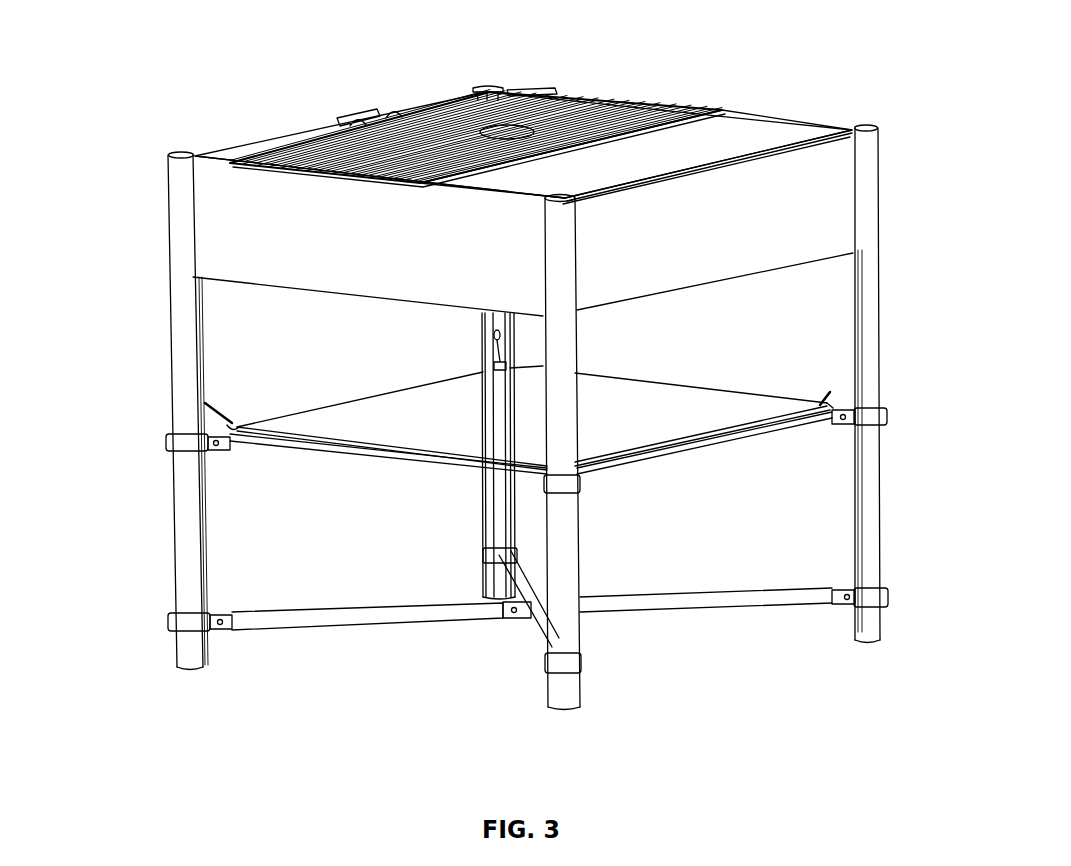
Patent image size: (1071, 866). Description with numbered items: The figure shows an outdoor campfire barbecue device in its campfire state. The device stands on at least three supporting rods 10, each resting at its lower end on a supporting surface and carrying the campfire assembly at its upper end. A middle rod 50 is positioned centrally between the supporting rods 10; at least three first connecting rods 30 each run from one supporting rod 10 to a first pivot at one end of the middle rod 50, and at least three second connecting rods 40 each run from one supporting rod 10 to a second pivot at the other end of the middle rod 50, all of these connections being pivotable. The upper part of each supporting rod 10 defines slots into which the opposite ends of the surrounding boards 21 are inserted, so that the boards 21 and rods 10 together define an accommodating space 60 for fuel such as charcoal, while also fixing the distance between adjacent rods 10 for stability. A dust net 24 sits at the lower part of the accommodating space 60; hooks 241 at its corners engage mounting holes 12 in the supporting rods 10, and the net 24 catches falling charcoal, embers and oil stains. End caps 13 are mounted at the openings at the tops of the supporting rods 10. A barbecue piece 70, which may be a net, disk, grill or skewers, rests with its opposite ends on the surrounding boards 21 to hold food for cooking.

The supporting rod 10 is at (190, 515).
The mounting hole 12 is at (495, 335).
The end cap 13 is at (486, 87).
The surrounding board 21 is at (236, 254).
The dust net 24 is at (782, 396).
The hook 241 is at (228, 425).
The first connecting rod 30 is at (812, 420).
The second connecting rod 40 is at (815, 597).
The middle rod 50 is at (534, 520).
The accommodating space 60 is at (747, 141).
The barbecue piece 70 is at (610, 109).